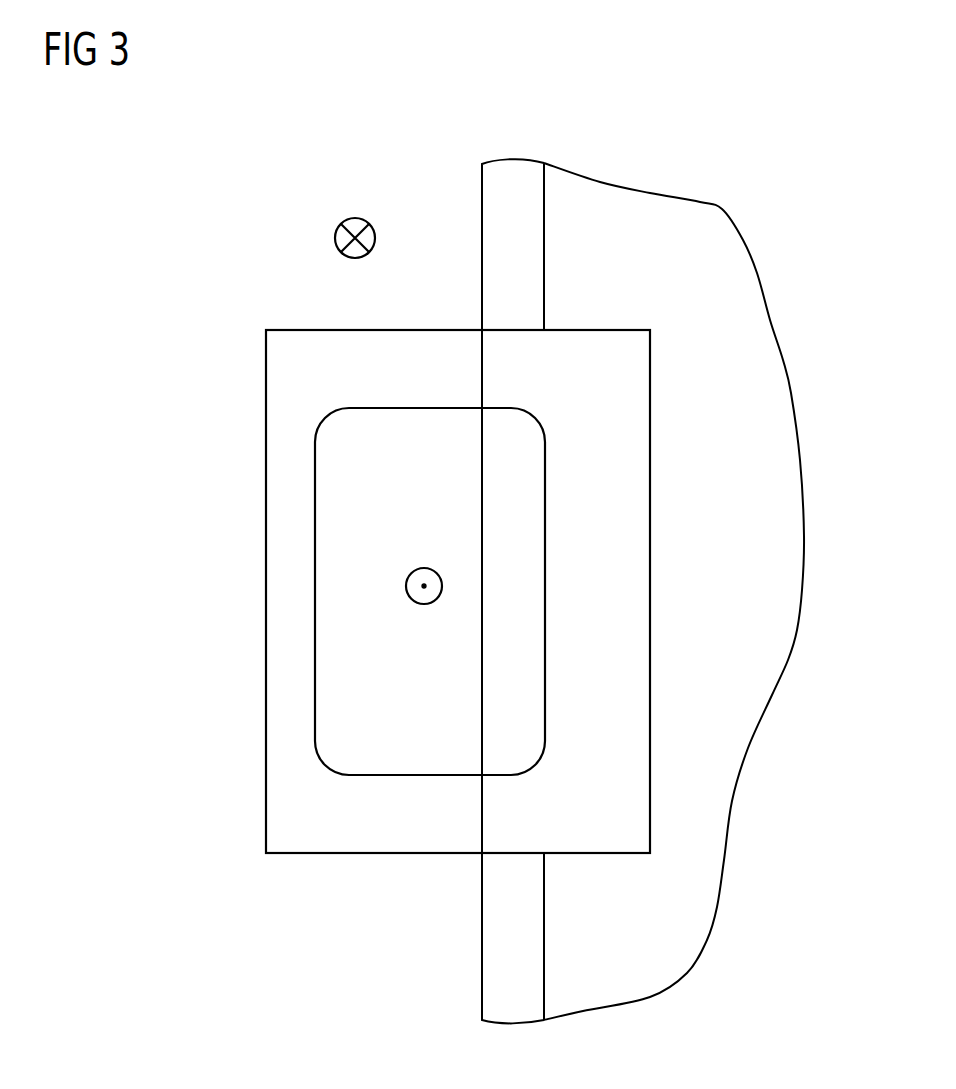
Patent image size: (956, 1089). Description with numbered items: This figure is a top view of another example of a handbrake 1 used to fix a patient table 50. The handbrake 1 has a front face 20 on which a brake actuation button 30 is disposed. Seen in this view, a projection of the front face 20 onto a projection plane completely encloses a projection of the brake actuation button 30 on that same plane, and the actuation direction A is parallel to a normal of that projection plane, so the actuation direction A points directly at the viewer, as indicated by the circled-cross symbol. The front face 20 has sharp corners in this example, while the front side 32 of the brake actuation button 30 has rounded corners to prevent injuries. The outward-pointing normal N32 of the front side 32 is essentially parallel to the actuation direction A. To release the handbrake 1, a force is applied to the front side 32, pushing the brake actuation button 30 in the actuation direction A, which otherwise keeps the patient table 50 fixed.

The handbrake 1 is at (394, 626).
The front face 20 is at (277, 368).
The brake actuation button 30 is at (430, 665).
The front side 32 is at (390, 757).
The outward-pointing normal of the front side N32 is at (423, 605).
The patient table 50 is at (737, 272).
The actuation direction A is at (335, 238).